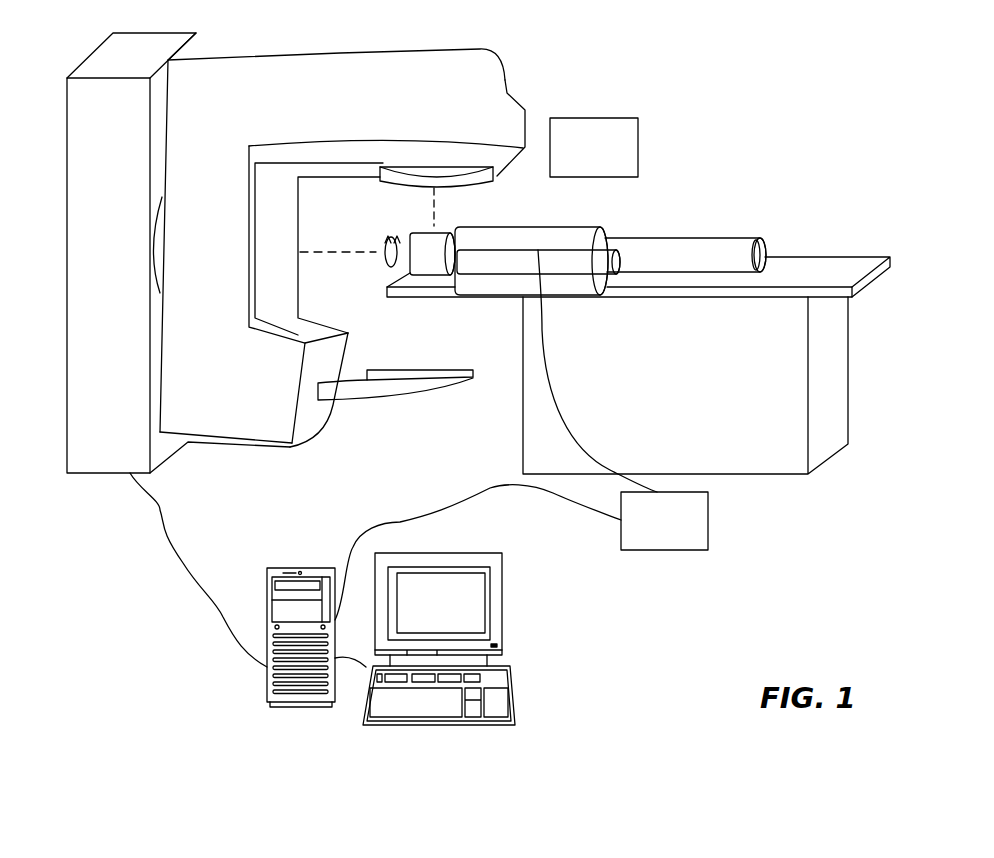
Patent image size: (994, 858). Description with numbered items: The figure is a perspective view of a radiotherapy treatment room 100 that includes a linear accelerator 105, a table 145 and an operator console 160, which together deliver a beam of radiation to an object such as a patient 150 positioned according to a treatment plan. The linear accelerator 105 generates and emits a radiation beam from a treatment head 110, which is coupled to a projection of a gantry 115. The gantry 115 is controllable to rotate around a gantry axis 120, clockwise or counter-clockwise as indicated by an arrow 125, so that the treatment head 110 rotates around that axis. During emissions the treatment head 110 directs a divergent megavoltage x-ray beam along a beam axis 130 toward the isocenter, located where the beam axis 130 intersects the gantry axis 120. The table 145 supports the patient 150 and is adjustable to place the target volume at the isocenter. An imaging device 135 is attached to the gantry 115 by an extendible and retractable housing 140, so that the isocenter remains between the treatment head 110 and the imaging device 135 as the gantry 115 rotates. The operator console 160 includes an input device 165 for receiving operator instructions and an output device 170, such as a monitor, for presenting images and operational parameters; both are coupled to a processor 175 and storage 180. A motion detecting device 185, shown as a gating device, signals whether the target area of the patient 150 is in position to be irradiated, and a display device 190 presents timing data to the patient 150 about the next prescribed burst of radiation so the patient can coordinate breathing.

The radiotherapy treatment room 100 is at (760, 98).
The linear accelerator 105 is at (333, 246).
The treatment head 110 is at (513, 153).
The gantry 115 is at (323, 52).
The gantry axis 120 is at (374, 254).
The arrow 125 is at (388, 236).
The beam axis 130 is at (435, 205).
The imaging device 135 is at (473, 379).
The housing 140 is at (372, 398).
The table 145 is at (815, 270).
The patient 150 is at (570, 227).
The operator console 160 is at (421, 618).
The input device 165 is at (515, 712).
The output device 170 is at (500, 603).
The processor 175 is at (314, 609).
The storage 180 is at (297, 568).
The motion detecting device 185 is at (708, 520).
The display device 190 is at (638, 141).